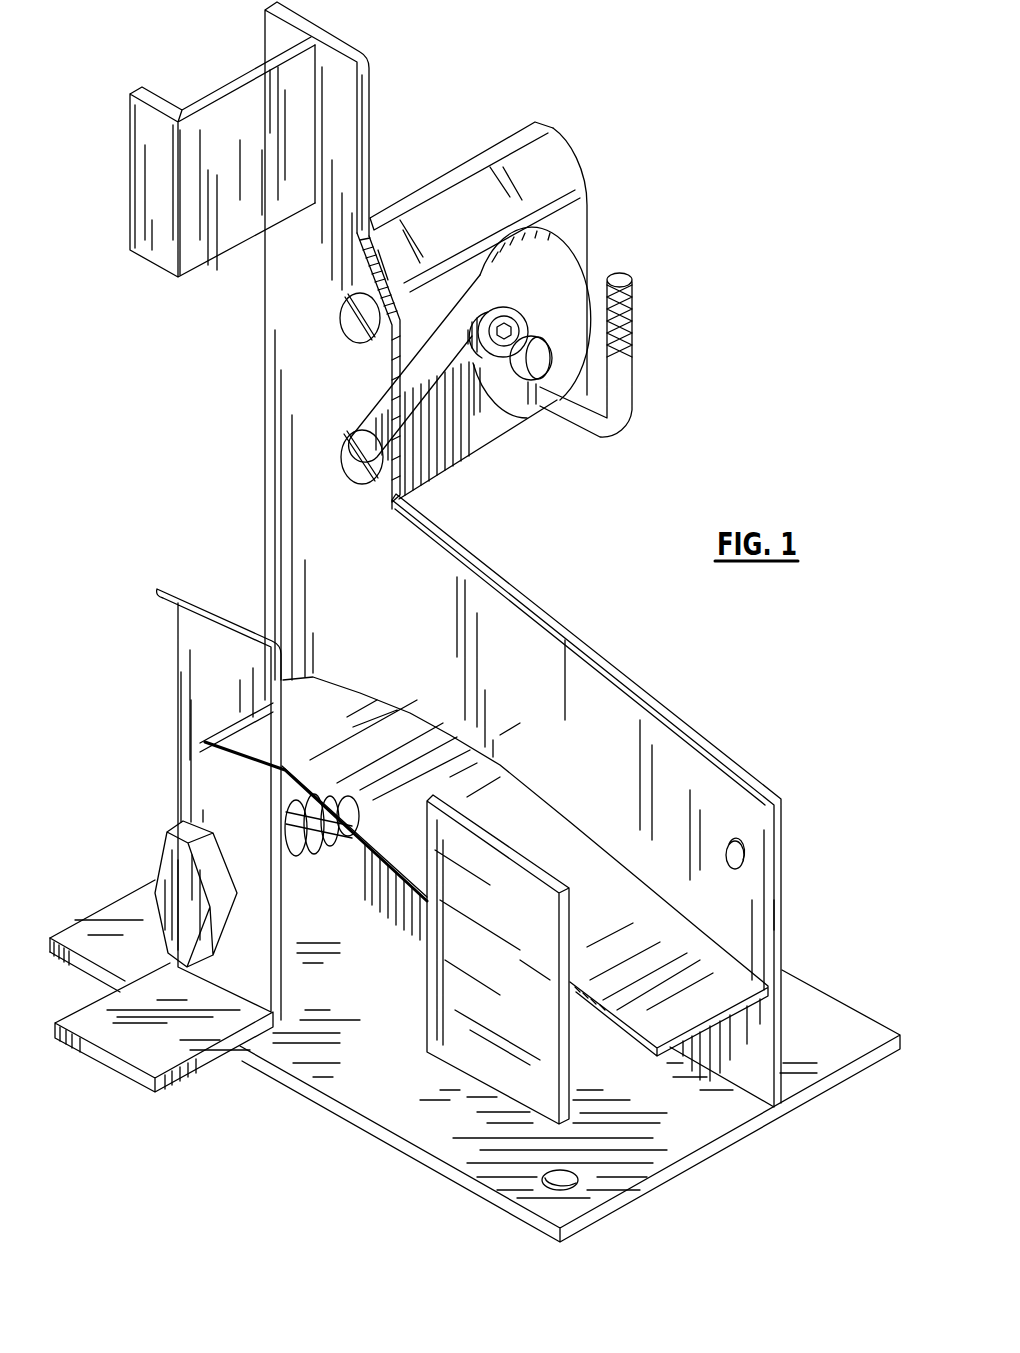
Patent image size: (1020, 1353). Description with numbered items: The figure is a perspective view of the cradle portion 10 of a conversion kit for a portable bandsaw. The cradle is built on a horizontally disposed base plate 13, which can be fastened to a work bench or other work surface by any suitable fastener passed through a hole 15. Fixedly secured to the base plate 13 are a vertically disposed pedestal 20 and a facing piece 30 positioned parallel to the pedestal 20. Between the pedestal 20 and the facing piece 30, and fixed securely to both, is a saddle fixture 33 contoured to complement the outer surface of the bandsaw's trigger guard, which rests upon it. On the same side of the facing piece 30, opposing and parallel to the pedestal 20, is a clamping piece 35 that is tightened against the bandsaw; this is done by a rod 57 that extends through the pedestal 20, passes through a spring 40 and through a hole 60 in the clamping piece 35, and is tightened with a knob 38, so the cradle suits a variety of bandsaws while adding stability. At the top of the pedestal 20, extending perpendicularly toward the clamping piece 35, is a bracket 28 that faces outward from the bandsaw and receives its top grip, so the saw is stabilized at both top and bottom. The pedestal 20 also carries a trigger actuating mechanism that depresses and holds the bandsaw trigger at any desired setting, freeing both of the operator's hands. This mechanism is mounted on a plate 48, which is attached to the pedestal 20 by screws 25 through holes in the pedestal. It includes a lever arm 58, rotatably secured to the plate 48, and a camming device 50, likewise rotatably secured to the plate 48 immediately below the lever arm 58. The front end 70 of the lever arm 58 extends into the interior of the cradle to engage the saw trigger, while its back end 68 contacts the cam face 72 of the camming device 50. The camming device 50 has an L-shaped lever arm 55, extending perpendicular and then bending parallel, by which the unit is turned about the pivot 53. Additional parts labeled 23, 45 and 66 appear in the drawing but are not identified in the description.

The cradle portion 10 is at (238, 512).
The base plate 13 is at (695, 1163).
The hole 15 is at (557, 1185).
The pedestal 20 is at (796, 913).
The upright plate 23 is at (675, 722).
The screws 25 is at (345, 445).
The bracket 28 is at (212, 87).
The facing piece 30 is at (470, 1078).
The saddle fixture 33 is at (653, 1030).
The clamping piece 35 is at (178, 733).
The knob 38 is at (152, 880).
The spring 40 is at (320, 850).
The clamp assembly 45 is at (580, 153).
The plate 48 is at (510, 136).
The camming device 50 is at (532, 410).
The pivot 53 is at (630, 278).
The L-shaped lever arm 55 is at (633, 400).
The rod 57 is at (343, 850).
The lever arm 58 is at (478, 262).
The hole 60 is at (247, 842).
The spacer 66 is at (480, 352).
The back end 68 is at (560, 262).
The front end 70 is at (355, 425).
The cam face 72 is at (534, 300).